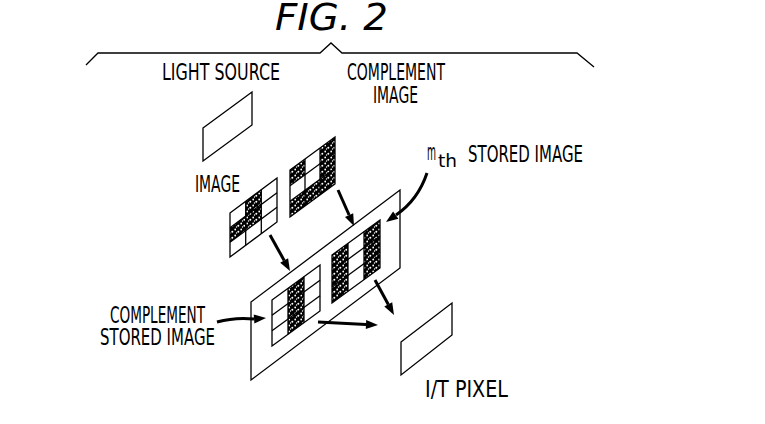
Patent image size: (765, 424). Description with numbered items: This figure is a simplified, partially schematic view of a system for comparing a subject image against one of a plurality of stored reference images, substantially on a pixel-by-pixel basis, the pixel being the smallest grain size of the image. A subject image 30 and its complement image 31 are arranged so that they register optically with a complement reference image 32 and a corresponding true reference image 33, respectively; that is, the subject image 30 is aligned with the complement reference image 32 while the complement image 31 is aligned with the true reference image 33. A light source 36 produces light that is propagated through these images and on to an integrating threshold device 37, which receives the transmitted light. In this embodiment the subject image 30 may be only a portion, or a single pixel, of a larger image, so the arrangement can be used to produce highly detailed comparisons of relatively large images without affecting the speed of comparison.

The subject image 30 is at (230, 260).
The complement image 31 is at (337, 160).
The complement reference image 32 is at (270, 338).
The true reference image 33 is at (387, 237).
The light source 36 is at (212, 130).
The integrating threshold device 37 is at (432, 335).